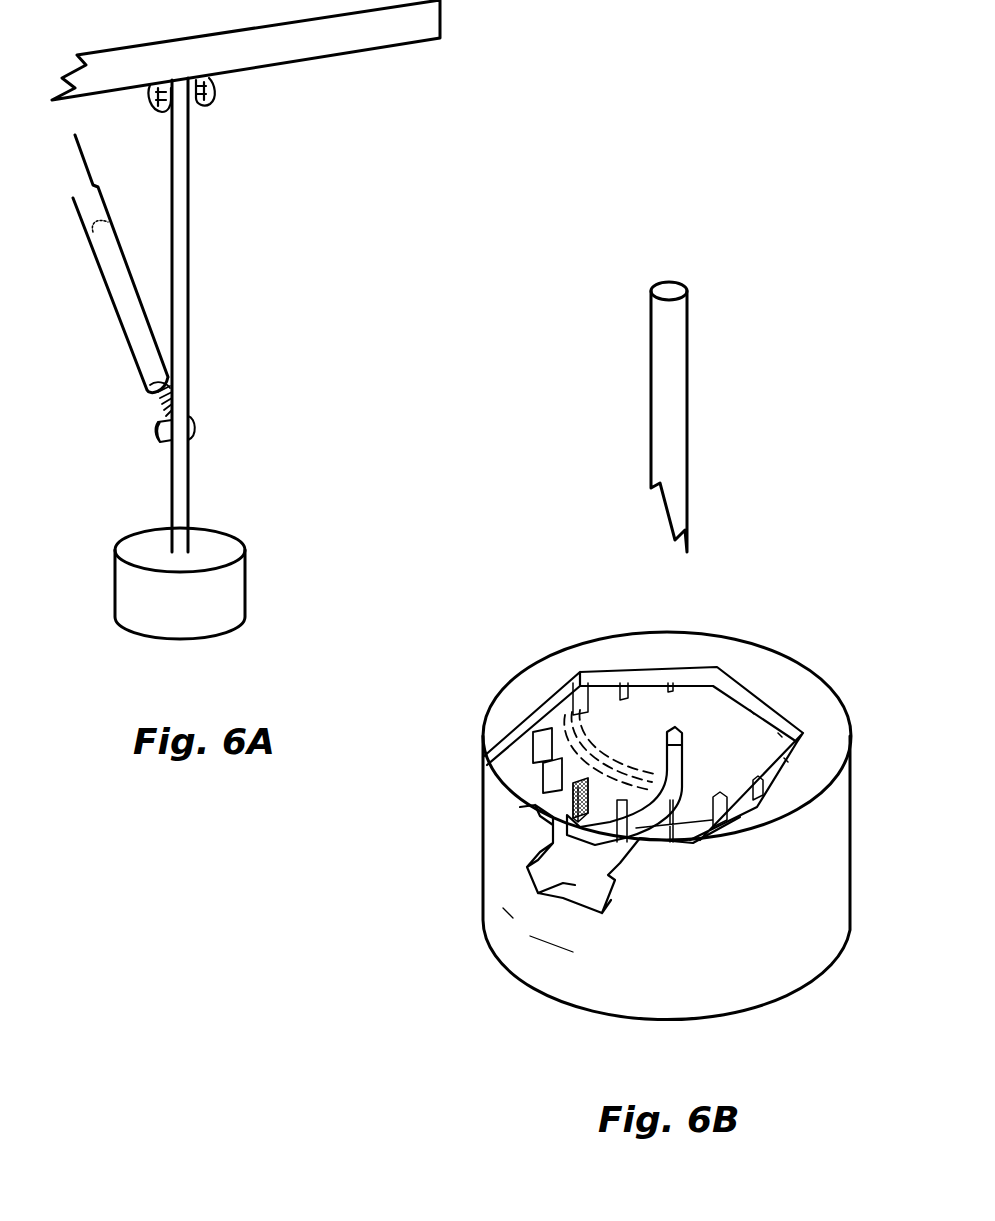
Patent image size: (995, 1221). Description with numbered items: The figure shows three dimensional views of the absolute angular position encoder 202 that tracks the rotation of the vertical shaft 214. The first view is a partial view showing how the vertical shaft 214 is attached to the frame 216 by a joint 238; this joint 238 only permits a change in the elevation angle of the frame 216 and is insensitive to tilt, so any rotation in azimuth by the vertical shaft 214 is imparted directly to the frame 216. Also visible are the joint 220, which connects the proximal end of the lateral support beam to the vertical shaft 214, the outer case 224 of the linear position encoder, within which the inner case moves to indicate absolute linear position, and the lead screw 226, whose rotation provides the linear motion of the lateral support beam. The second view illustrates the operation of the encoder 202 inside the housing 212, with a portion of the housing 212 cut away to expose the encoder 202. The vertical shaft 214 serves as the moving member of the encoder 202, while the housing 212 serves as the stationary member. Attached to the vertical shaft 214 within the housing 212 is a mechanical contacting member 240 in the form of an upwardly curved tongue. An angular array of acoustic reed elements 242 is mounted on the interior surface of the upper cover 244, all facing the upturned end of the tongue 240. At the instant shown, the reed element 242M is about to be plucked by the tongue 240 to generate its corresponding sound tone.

In FIG. 6B, the absolute angular position encoder 202 is at (790, 601).
In FIG. 6A, the housing 212 is at (215, 532).
In FIG. 6B, the housing 212 is at (510, 680).
In FIG. 6A, the vertical shaft 214 is at (190, 200).
In FIG. 6B, the vertical shaft 214 is at (687, 418).
In FIG. 6A, the frame 216 is at (403, 45).
In FIG. 6A, the joint 220 is at (160, 435).
In FIG. 6A, the outer case 224 is at (95, 300).
In FIG. 6A, the lead screw 226 is at (155, 400).
In FIG. 6A, the joint 238 is at (215, 97).
In FIG. 6B, the mechanical contacting member 240 is at (682, 760).
In FIG. 6B, the acoustic reed elements 242 is at (640, 707).
In FIG. 6B, the reed element 242M is at (517, 810).
In FIG. 6B, the upper cover 244 is at (622, 645).